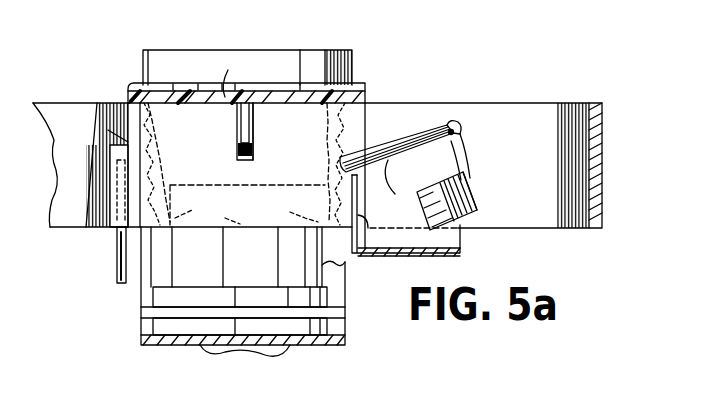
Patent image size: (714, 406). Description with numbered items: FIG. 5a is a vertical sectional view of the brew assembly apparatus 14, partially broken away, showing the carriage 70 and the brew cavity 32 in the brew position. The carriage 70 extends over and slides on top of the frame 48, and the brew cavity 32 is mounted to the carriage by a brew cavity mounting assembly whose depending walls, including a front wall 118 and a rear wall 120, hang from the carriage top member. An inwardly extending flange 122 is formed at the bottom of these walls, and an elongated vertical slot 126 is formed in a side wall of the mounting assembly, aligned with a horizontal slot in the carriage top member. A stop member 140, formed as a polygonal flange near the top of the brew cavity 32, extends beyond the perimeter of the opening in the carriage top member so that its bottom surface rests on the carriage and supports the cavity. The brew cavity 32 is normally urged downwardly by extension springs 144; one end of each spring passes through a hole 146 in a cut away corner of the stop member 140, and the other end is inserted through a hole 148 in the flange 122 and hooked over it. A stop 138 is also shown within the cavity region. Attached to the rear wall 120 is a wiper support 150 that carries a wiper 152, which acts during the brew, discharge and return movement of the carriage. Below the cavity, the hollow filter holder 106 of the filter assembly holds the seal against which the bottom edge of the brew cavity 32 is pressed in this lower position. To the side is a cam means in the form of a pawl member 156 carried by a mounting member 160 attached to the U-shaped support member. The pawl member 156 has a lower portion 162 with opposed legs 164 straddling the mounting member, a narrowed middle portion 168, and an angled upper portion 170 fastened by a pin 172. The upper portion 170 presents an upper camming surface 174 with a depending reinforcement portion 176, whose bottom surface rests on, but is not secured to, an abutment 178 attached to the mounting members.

The filling apparatus 14 is at (545, 86).
The brew cavity 32 is at (192, 58).
The wall 48 is at (602, 157).
The carriage 70 is at (304, 27).
The filter holder 106 is at (165, 298).
The front wall 118 is at (360, 117).
The rear wall 120 is at (104, 150).
The flange 122 is at (246, 213).
The vertical slot 126 is at (254, 126).
The stop 138 is at (237, 153).
The stop member 140 is at (366, 86).
The extension spring 144 is at (108, 130).
The hole 146 is at (150, 86).
The hole 148 is at (247, 214).
The wiper support 150 is at (110, 207).
The wiper 152 is at (117, 272).
The pawl member 156 is at (481, 141).
The mounting member 160 is at (473, 228).
The lower portion 162 is at (470, 184).
The leg 164 is at (477, 210).
The middle portion 168 is at (470, 152).
The upper portion 170 is at (437, 120).
The pin 172 is at (462, 122).
The upper camming surface 174 is at (380, 131).
The reinforcement portion 176 is at (385, 188).
The abutment 178 is at (378, 232).